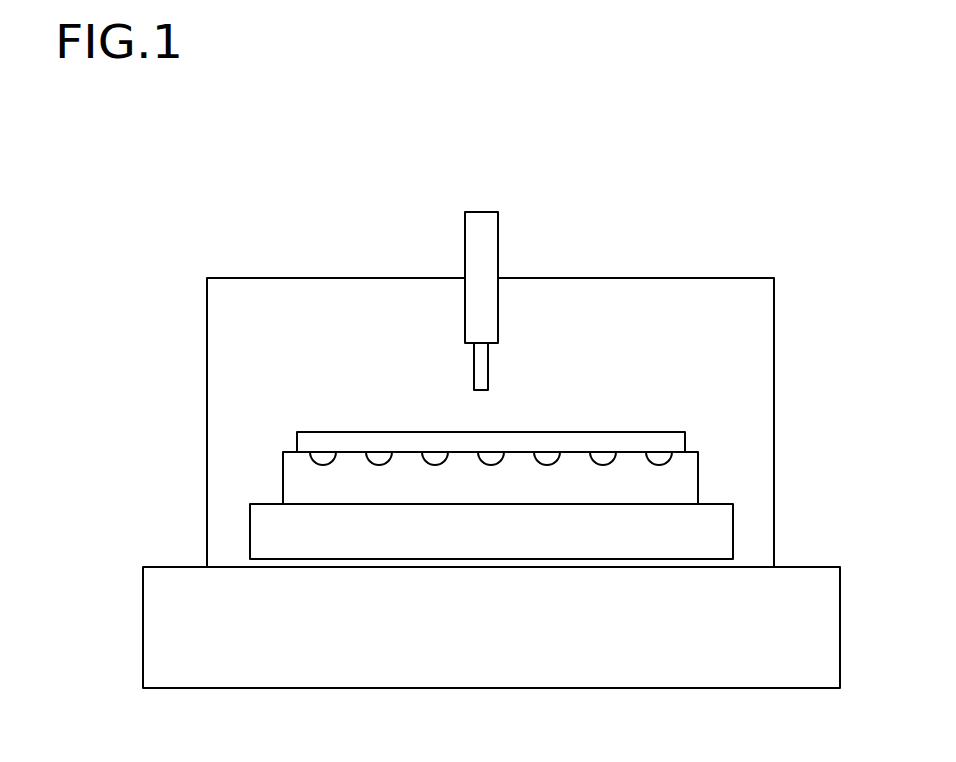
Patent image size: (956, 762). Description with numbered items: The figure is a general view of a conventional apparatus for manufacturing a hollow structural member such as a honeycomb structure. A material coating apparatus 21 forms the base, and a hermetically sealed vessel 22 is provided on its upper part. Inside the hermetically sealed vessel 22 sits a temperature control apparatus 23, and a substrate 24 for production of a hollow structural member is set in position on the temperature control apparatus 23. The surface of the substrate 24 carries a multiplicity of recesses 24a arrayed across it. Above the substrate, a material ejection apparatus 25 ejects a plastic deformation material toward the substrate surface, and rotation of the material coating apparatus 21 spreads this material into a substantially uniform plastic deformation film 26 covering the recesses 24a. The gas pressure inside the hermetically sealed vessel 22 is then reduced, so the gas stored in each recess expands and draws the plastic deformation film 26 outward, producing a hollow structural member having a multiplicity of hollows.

The material coating apparatus 21 is at (535, 680).
The hermetically sealed vessel 22 is at (613, 278).
The temperature control apparatus 23 is at (720, 528).
The substrate for production of a hollow structural member 24 is at (293, 462).
The recesses 24a is at (378, 457).
The material ejection apparatus 25 is at (465, 228).
The plastic deformation film 26 is at (595, 431).